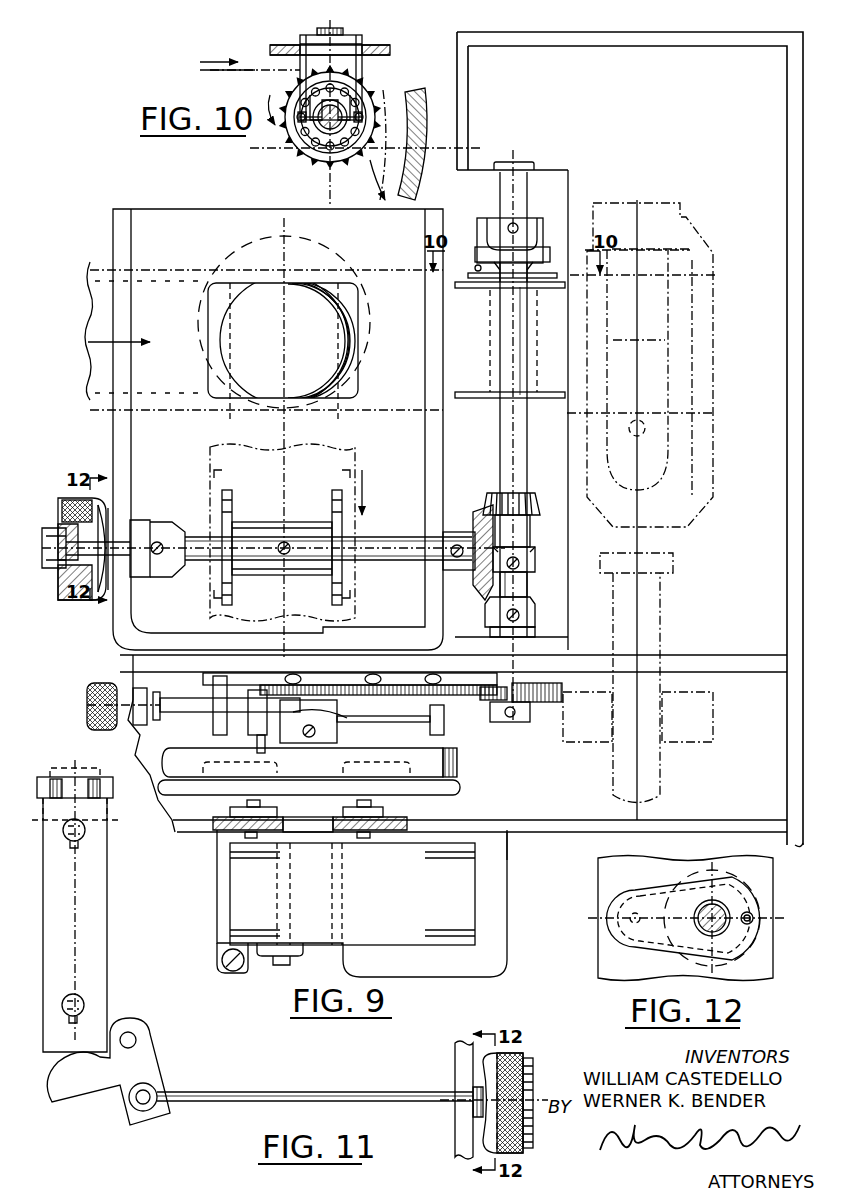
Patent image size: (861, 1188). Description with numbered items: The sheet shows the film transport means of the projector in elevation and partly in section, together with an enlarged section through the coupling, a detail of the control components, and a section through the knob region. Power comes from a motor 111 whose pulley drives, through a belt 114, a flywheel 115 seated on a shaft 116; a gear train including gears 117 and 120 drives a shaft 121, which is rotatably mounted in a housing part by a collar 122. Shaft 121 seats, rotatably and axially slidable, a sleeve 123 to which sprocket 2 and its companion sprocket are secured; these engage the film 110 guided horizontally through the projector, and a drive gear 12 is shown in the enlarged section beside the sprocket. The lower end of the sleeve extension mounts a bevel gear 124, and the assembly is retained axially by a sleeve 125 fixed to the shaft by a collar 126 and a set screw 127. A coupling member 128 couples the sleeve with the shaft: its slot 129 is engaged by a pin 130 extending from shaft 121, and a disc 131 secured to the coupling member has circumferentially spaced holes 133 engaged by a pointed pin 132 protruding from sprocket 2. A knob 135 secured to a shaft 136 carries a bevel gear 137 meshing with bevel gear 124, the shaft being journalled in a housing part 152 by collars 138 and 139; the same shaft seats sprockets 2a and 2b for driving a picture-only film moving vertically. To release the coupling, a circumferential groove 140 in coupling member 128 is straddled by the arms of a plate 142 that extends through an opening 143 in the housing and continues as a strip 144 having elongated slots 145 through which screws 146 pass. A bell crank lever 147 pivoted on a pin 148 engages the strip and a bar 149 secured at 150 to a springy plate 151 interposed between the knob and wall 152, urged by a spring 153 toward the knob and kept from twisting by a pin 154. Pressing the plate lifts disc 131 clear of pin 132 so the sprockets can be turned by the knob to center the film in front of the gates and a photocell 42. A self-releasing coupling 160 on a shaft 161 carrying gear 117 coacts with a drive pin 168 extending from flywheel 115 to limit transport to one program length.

In FIG. 10, the sprocket 2 is at (300, 150).
In FIG. 9, the sprocket 2 is at (470, 290).
In FIG. 9, the sprocket 2a is at (230, 503).
In FIG. 9, the sprocket 2b is at (346, 596).
In FIG. 10, the drive gear 12 is at (408, 118).
In FIG. 9, the photocell 42 is at (713, 455).
In FIG. 9, the film 110 is at (88, 308).
In FIG. 9, the motor 111 is at (468, 900).
In FIG. 9, the belt 114 is at (460, 788).
In FIG. 9, the flywheel 115 is at (456, 770).
In FIG. 9, the shaft 116 is at (318, 768).
In FIG. 9, the gear 117 is at (268, 674).
In FIG. 9, the gear 120 is at (548, 704).
In FIG. 10, the shaft 121 is at (340, 105).
In FIG. 9, the shaft 121 is at (516, 586).
In FIG. 9, the collar 122 is at (536, 618).
In FIG. 9, the sleeve 123 is at (530, 318).
In FIG. 9, the bevel gear 124 is at (534, 504).
In FIG. 9, the sleeve 125 is at (522, 534).
In FIG. 9, the collar 126 is at (531, 560).
In FIG. 9, the set screw 127 is at (520, 567).
In FIG. 10, the coupling member 128 is at (345, 150).
In FIG. 9, the coupling member 128 is at (542, 228).
In FIG. 11, the coupling member 128 is at (62, 778).
In FIG. 9, the slot 129 is at (505, 238).
In FIG. 9, the pin 130 is at (517, 227).
In FIG. 10, the disc 131 is at (290, 88).
In FIG. 9, the disc 131 is at (548, 274).
In FIG. 10, the pin 132 is at (305, 122).
In FIG. 9, the pin 132 is at (474, 268).
In FIG. 10, the holes 133 is at (325, 155).
In FIG. 9, the knob 135 is at (60, 600).
In FIG. 11, the knob 135 is at (514, 1064).
In FIG. 9, the shaft 136 is at (378, 540).
In FIG. 12, the shaft 136 is at (727, 910).
In FIG. 9, the bevel gear 137 is at (482, 592).
In FIG. 9, the collar 138 is at (160, 522).
In FIG. 9, the collar 139 is at (457, 532).
In FIG. 9, the circumferential groove 140 is at (498, 262).
In FIG. 11, the circumferential groove 140 is at (54, 792).
In FIG. 10, the plate 142 is at (300, 62).
In FIG. 10, the opening 143 is at (305, 40).
In FIG. 9, the opening 143 is at (480, 235).
In FIG. 11, the opening 143 is at (110, 792).
In FIG. 10, the strip 144 is at (356, 42).
In FIG. 11, the strip 144 is at (98, 906).
In FIG. 11, the slots 145 is at (80, 846).
In FIG. 10, the fastening pins or screws 146 is at (330, 30).
In FIG. 11, the fastening pins or screws 146 is at (86, 832).
In FIG. 11, the bell crank lever 147 is at (150, 1068).
In FIG. 11, the pivot pin 148 is at (137, 1040).
In FIG. 11, the bar 149 is at (213, 1102).
In FIG. 11, the securing point 150 is at (487, 1112).
In FIG. 12, the securing point 150 is at (612, 926).
In FIG. 9, the spring plate 151 is at (137, 556).
In FIG. 11, the spring plate 151 is at (468, 1066).
In FIG. 12, the spring plate 151 is at (647, 935).
In FIG. 9, the housing wall 152 is at (116, 448).
In FIG. 11, the housing wall 152 is at (462, 1075).
In FIG. 12, the housing wall 152 is at (633, 868).
In FIG. 9, the spring 153 is at (108, 530).
In FIG. 12, the pin 154 is at (752, 922).
In FIG. 9, the self-releasing coupling 160 is at (436, 739).
In FIG. 9, the shaft 161 is at (316, 668).
In FIG. 9, the drive pin 168 is at (245, 735).